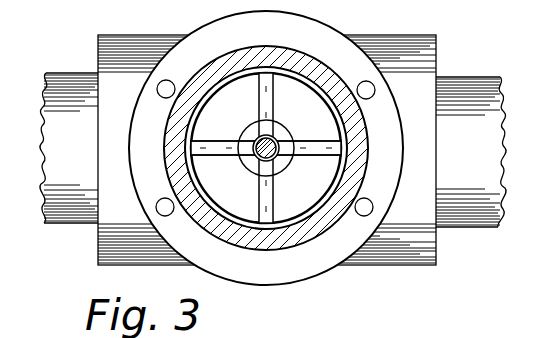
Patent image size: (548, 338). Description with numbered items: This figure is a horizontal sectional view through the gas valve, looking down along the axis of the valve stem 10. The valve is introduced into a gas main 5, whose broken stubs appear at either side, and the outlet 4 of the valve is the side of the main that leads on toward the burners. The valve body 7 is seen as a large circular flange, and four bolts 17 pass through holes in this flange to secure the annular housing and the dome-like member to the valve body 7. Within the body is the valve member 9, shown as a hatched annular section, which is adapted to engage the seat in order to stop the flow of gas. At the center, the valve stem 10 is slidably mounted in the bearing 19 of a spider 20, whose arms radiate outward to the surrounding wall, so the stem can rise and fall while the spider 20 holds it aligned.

The outlet 4 is at (436, 60).
The gas main 5 is at (504, 148).
The valve body 7 is at (211, 257).
The valve member 9 is at (307, 77).
The valve stem 10 is at (276, 139).
The bolts 17 is at (163, 80).
The bearing 19 is at (278, 162).
The spider 20 is at (217, 153).